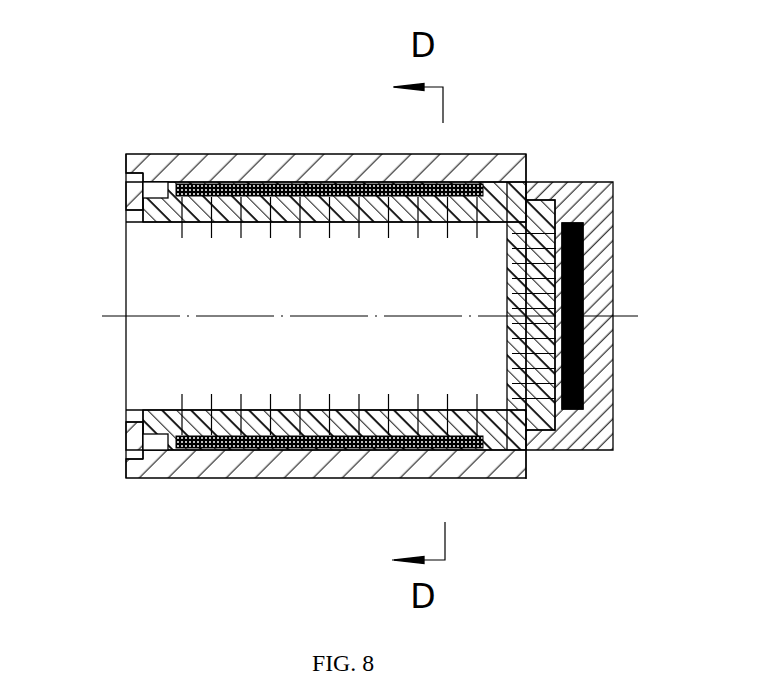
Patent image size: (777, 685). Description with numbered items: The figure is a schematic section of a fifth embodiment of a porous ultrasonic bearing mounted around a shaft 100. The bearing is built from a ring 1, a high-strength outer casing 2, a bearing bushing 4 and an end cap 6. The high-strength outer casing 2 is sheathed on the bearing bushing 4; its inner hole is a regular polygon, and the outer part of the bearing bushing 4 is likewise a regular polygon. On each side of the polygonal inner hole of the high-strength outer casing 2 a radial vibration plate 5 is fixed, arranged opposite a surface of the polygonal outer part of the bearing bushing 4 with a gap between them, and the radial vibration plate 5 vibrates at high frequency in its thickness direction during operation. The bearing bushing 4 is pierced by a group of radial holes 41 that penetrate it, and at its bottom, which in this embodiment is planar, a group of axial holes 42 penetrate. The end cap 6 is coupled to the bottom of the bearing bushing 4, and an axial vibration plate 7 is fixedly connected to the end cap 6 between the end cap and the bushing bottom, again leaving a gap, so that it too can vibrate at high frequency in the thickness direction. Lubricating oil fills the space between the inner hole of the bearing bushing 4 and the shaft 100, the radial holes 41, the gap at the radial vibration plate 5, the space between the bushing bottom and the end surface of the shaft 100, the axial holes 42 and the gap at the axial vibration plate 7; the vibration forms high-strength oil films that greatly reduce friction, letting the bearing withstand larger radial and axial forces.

The shaft 100 is at (132, 288).
The ring 1 is at (136, 170).
The high-strength outer casing 2 is at (181, 172).
The radial holes 41 is at (215, 207).
The radial vibration plate 5 is at (322, 186).
The bearing bushing 4 is at (506, 207).
The axial holes 42 is at (537, 238).
The end cap 6 is at (575, 200).
The axial vibration plate 7 is at (613, 212).